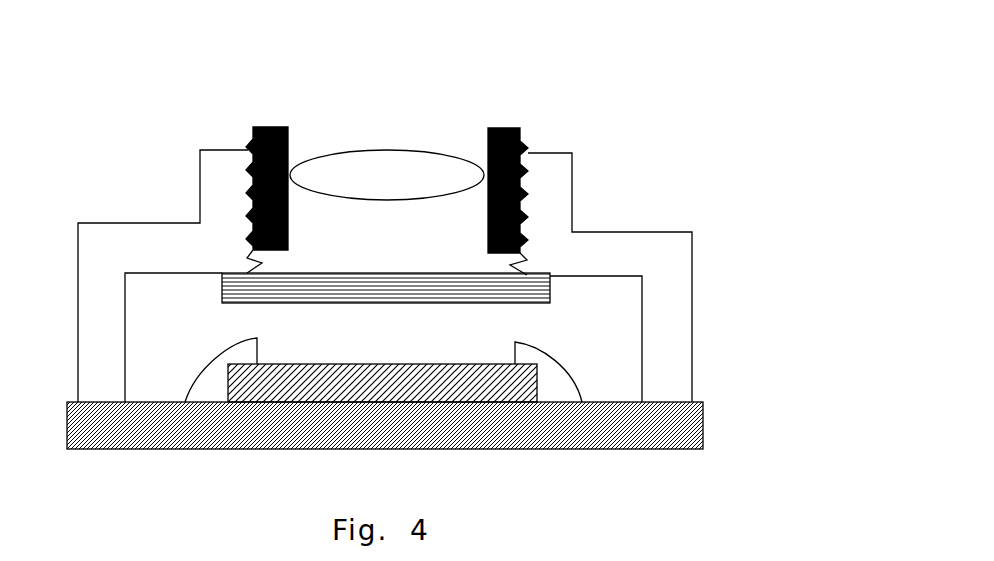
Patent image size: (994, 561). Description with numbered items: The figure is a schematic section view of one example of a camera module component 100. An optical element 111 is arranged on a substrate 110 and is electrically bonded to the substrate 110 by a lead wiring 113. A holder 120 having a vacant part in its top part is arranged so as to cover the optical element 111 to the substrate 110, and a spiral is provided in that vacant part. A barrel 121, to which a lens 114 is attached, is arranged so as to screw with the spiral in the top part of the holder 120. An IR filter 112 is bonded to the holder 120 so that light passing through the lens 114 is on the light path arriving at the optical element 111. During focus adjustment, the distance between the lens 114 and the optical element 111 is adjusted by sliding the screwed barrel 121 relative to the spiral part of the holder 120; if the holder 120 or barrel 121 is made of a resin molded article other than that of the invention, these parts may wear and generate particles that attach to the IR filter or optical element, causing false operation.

The camera module component 100 is at (742, 98).
The substrate 110 is at (712, 437).
The optical element 111 is at (340, 358).
The IR filter 112 is at (411, 309).
The lead wiring 113 is at (200, 350).
The lens 114 is at (404, 136).
The holder 120 is at (115, 218).
The barrel 121 is at (250, 118).